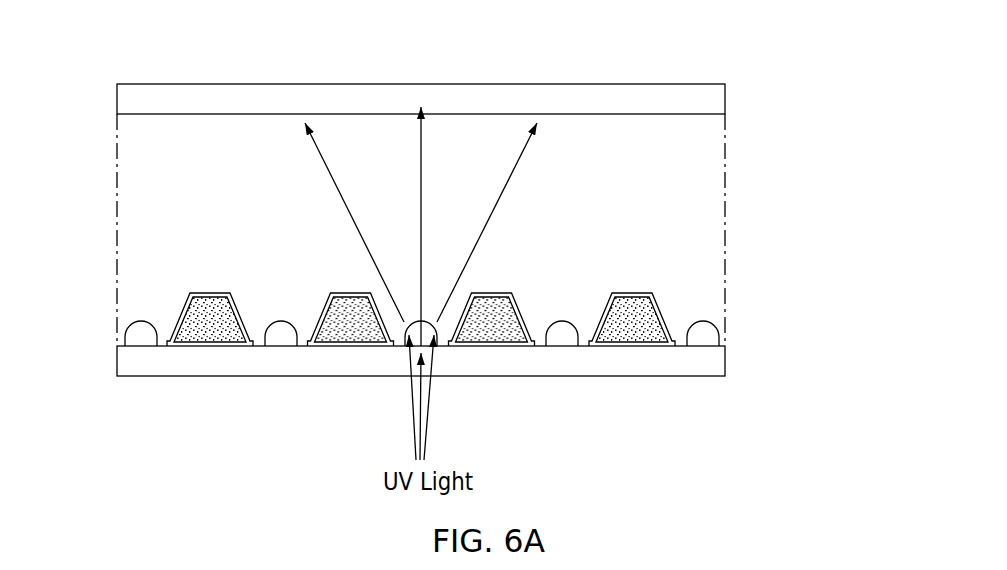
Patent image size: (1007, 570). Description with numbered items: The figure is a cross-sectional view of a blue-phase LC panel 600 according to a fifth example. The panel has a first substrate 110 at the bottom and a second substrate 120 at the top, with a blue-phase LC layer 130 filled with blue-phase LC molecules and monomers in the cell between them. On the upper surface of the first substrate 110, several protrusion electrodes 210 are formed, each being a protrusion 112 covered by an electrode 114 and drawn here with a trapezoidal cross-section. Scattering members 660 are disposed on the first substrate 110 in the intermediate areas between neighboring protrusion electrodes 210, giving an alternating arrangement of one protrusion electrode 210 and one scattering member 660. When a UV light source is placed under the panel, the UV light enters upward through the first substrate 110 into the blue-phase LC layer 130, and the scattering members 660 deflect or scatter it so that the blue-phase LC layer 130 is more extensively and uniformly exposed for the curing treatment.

The blue-phase LC panel 600 is at (727, 32).
The first substrate 110 is at (717, 368).
The second substrate 120 is at (716, 103).
The blue-phase LC layer 130 is at (716, 206).
The protrusion electrode 210 is at (135, 307).
The protrusion 112 is at (197, 333).
The electrode 114 is at (193, 303).
The scattering member 660 is at (562, 332).